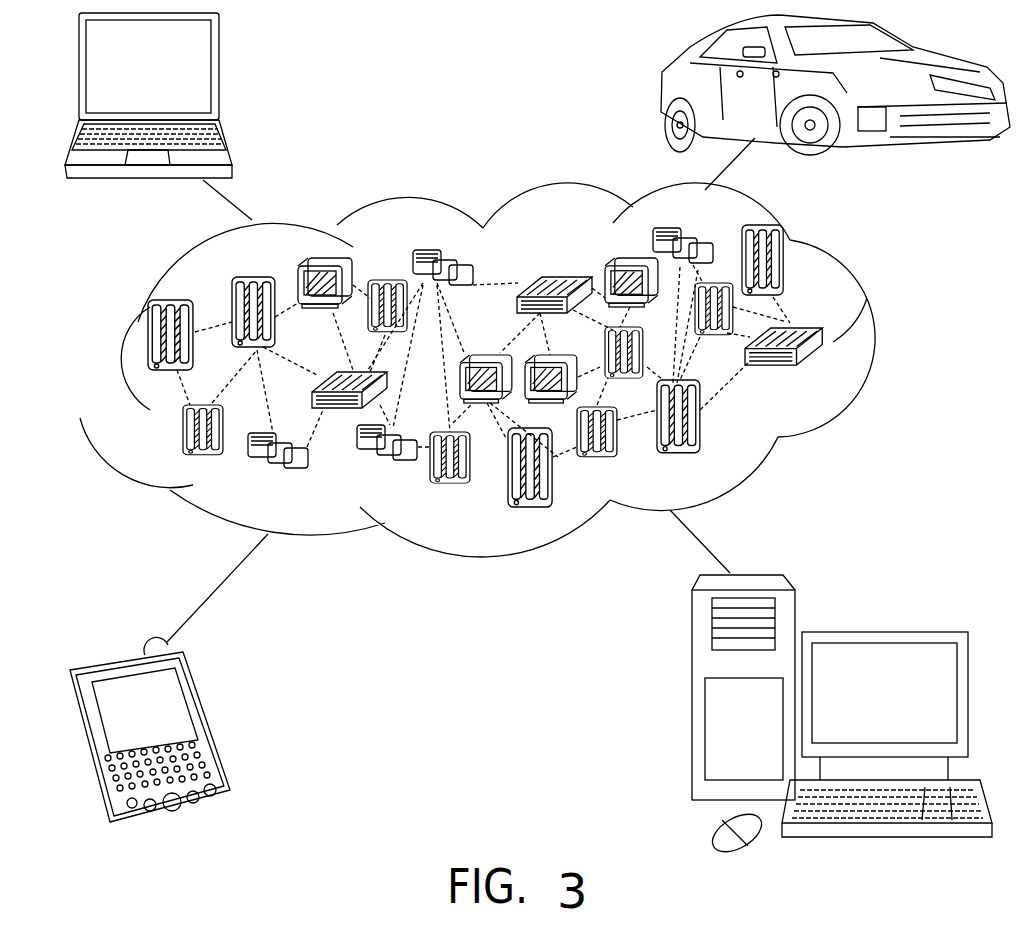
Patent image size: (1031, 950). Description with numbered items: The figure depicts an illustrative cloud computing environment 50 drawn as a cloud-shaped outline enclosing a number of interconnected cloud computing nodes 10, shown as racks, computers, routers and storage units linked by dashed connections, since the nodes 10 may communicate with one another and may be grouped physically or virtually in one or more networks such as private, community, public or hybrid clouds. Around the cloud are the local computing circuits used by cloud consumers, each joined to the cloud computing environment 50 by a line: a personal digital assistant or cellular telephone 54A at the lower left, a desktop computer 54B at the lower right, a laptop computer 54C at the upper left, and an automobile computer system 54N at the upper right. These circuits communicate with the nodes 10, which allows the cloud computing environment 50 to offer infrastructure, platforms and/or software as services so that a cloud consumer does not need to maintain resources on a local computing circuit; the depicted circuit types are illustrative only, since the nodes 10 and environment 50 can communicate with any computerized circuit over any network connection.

The laptop computer 54C is at (219, 75).
The automobile computer system 54N is at (660, 90).
The personal digital assistant (PDA) or cellular telephone 54A is at (210, 727).
The desktop computer 54B is at (882, 630).
The cloud computing environment 50 is at (887, 345).
The cloud computing nodes 10 is at (828, 378).